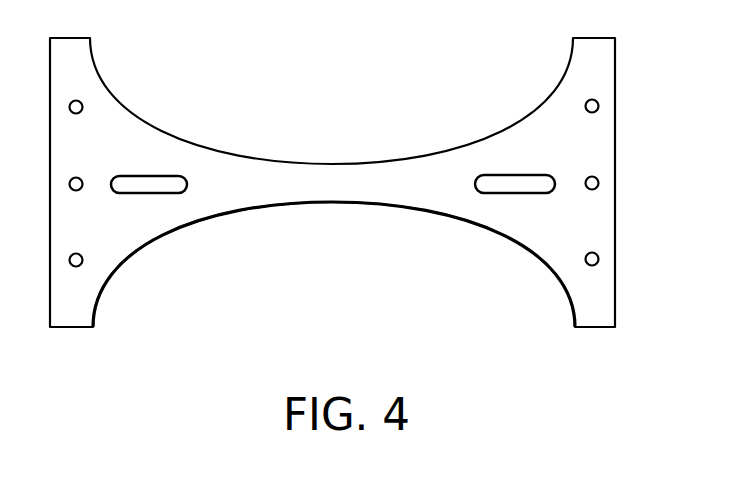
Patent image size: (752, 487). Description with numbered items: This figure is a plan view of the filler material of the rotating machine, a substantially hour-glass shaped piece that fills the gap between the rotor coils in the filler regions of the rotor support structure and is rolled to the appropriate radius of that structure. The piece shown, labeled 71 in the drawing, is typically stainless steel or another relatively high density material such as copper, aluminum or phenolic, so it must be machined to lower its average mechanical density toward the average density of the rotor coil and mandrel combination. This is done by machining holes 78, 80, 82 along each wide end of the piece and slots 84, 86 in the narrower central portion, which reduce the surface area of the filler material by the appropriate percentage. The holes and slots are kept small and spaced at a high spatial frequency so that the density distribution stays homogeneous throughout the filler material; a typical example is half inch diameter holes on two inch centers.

The strut plate 71 is at (396, 158).
The hole 78 is at (599, 106).
The hole 80 is at (599, 183).
The hole 82 is at (599, 259).
The slot 84 is at (142, 175).
The slot 86 is at (513, 193).